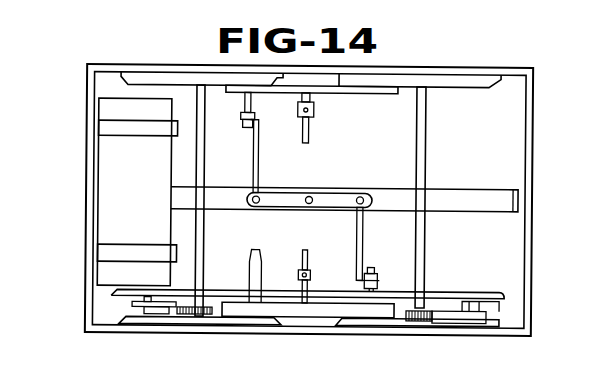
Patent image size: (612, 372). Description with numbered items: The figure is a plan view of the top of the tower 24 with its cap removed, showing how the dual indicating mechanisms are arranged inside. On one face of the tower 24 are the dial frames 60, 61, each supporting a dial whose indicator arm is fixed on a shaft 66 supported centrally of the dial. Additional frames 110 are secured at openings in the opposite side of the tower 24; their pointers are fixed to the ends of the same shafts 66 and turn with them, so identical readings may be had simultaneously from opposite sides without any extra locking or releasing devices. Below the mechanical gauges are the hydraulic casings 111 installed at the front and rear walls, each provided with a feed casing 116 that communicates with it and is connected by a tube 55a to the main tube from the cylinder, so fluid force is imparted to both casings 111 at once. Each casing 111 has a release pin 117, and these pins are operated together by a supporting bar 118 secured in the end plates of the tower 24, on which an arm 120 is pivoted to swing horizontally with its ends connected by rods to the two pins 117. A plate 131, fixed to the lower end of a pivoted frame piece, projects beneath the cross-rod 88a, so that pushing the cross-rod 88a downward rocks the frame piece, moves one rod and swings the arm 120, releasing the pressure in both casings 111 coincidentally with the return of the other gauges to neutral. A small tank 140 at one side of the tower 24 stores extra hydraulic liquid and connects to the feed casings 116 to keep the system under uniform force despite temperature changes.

The tower 24 is at (88, 227).
The tubes 55a is at (312, 130).
The dial frame 60 is at (195, 326).
The dial frame 61 is at (447, 328).
The shaft 66 is at (206, 163).
The cross-rod 88a is at (438, 292).
The additional frames 110 is at (186, 78).
The casing 111 is at (330, 90).
The feed casing 116 is at (299, 109).
The pin 117 is at (242, 110).
The supporting bar 118 is at (470, 194).
The arm 120 is at (328, 208).
The plate 131 is at (250, 275).
The tank 140 is at (105, 173).